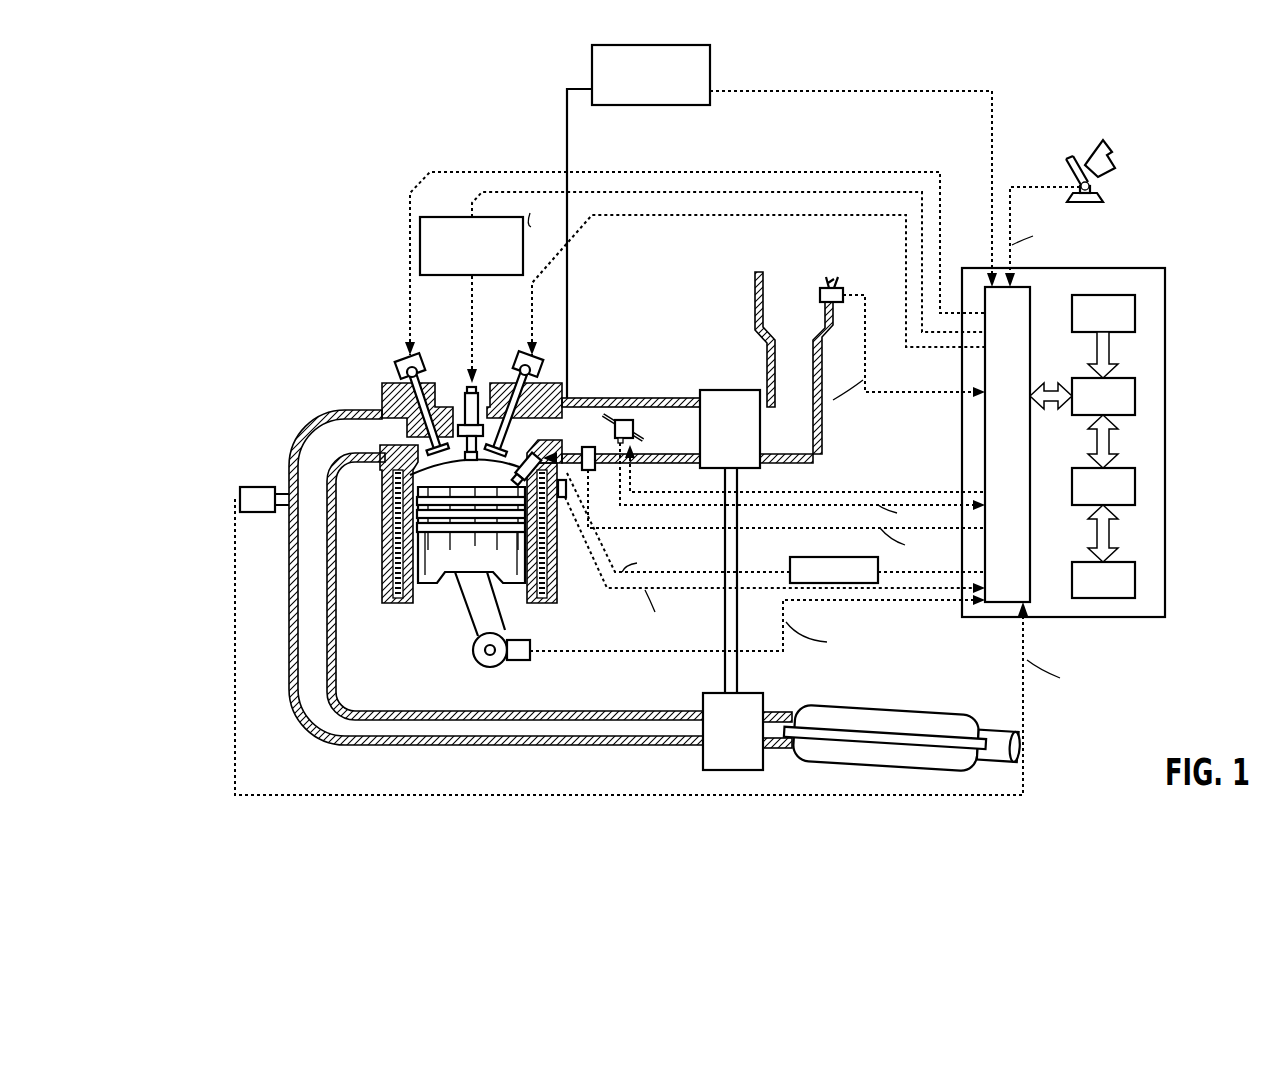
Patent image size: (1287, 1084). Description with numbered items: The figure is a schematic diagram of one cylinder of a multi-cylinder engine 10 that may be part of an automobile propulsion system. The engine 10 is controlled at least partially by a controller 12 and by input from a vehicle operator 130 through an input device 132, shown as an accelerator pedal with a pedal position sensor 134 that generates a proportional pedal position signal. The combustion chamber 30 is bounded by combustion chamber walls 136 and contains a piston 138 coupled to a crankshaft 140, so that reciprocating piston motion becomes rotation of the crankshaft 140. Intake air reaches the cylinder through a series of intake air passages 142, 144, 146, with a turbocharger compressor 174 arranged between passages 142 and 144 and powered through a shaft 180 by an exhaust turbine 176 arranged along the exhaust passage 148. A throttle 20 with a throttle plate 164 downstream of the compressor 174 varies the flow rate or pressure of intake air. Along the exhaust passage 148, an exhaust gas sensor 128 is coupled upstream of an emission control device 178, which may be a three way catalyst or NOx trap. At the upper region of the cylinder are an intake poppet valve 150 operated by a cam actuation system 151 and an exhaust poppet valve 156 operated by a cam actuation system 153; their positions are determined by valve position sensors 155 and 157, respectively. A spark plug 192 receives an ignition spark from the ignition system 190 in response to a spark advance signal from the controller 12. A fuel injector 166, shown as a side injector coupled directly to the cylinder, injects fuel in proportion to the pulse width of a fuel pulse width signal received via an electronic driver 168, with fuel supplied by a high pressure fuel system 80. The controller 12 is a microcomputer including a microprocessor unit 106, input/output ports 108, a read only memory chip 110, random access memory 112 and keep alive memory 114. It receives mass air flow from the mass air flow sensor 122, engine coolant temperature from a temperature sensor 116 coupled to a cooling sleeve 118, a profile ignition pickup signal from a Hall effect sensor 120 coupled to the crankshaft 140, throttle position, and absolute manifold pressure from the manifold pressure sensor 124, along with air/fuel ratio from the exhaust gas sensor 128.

The engine 10 is at (228, 112).
The controller 12 is at (1155, 270).
The throttle 20 is at (625, 420).
The combustion chamber 30 is at (395, 482).
The fuel system 80 is at (710, 55).
The microprocessor unit 106 is at (1136, 395).
The input/output ports 108 is at (1031, 297).
The read only memory chip 110 is at (1136, 308).
The random access memory 112 is at (1136, 488).
The keep alive memory 114 is at (1136, 580).
The temperature sensor 116 is at (562, 507).
The cooling sleeve 118 is at (548, 563).
The Hall effect sensor 120 is at (520, 663).
The mass air flow sensor 122 is at (838, 285).
The manifold pressure sensor 124 is at (588, 472).
The exhaust gas sensor 128 is at (240, 496).
The vehicle operator 130 is at (1108, 150).
The input device 132 is at (1062, 165).
The pedal position sensor 134 is at (1095, 187).
The combustion chamber walls 136 is at (422, 590).
The piston 138 is at (455, 560).
The crankshaft 140 is at (480, 665).
The intake air passage 142 is at (812, 318).
The intake air passage 144 is at (689, 438).
The intake air passage 146 is at (599, 438).
The exhaust passage 148 is at (369, 446).
The intake poppet valve 150 is at (500, 430).
The cam actuation system 151 is at (512, 350).
The cam actuation system 153 is at (430, 350).
The valve position sensor 155 is at (555, 370).
The exhaust poppet valve 156 is at (437, 447).
The valve position sensor 157 is at (398, 362).
The throttle plate 164 is at (609, 412).
The fuel injector 166 is at (533, 460).
The electronic driver 168 is at (790, 558).
The compressor 174 is at (718, 390).
The exhaust turbine 176 is at (703, 765).
The emission control device 178 is at (950, 708).
The shaft 180 is at (738, 658).
The ignition system 190 is at (432, 217).
The spark plug 192 is at (466, 418).